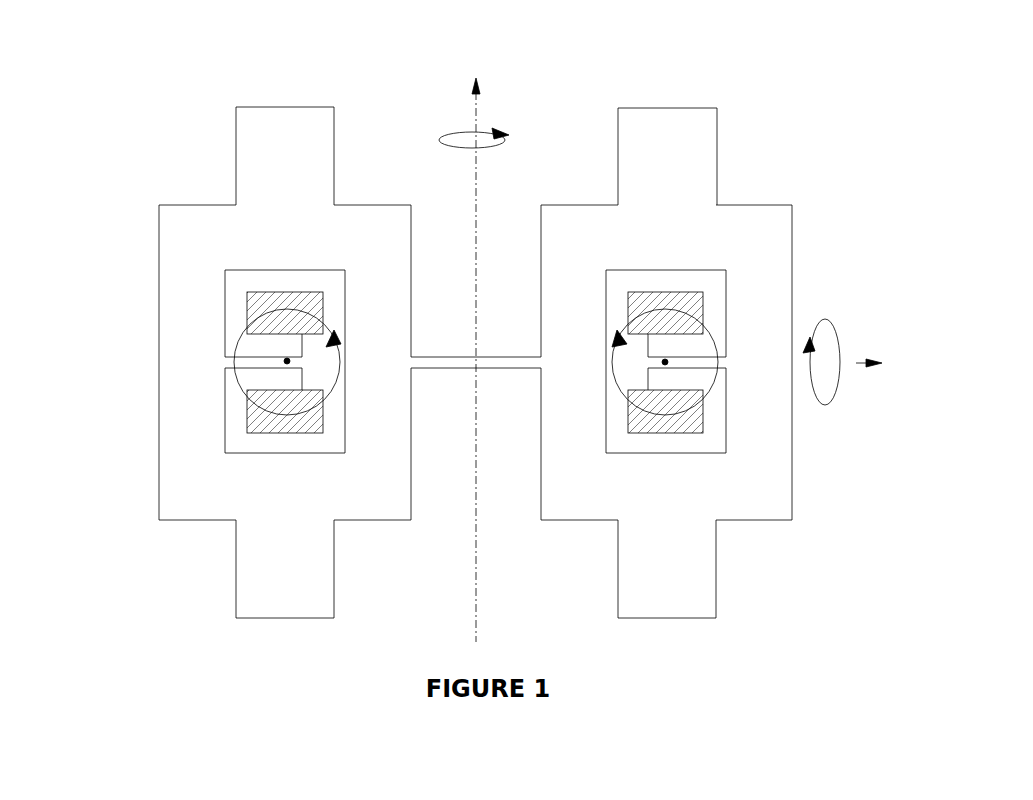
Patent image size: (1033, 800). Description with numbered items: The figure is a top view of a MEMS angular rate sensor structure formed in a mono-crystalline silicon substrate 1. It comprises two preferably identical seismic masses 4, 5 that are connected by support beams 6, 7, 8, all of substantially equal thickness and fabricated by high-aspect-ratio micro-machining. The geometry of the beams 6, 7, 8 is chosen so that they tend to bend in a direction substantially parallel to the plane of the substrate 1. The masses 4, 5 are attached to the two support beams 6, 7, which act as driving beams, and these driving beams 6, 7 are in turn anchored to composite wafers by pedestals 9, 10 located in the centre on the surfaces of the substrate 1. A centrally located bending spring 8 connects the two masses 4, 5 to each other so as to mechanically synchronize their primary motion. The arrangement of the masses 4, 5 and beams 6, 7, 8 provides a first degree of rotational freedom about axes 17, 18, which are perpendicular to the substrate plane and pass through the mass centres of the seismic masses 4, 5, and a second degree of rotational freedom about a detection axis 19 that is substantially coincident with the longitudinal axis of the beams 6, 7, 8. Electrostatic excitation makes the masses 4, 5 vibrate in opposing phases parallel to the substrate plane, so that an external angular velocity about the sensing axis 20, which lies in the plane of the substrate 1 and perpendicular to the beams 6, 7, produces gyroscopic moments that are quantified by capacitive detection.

The mono-crystalline silicon substrate 1 is at (132, 232).
The seismic mass 4 is at (326, 138).
The seismic mass 5 is at (624, 138).
The support beam 6 is at (250, 364).
The support beam 7 is at (705, 365).
The bending spring 8 is at (466, 362).
The pedestal 9 is at (307, 422).
The pedestal 10 is at (640, 313).
The axis 17 is at (295, 315).
The axis 18 is at (700, 323).
The detection axis 19 is at (857, 360).
The sensing axis 20 is at (472, 118).